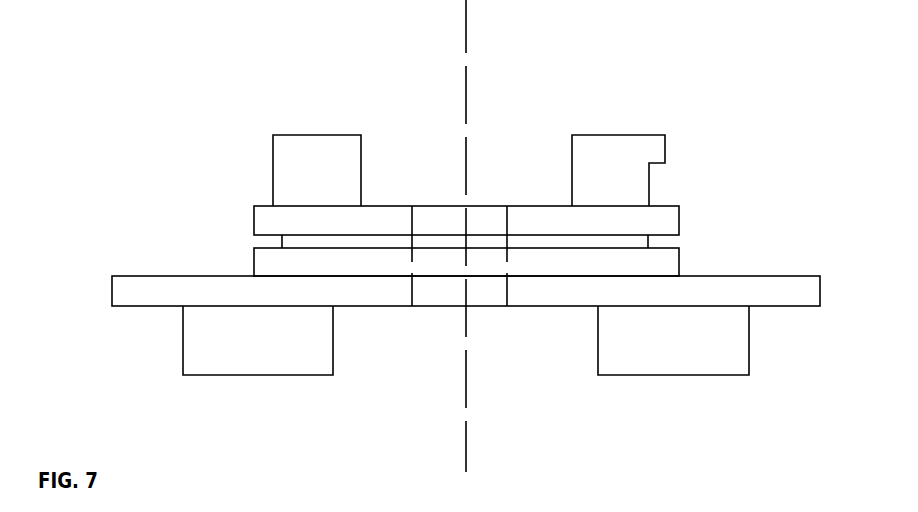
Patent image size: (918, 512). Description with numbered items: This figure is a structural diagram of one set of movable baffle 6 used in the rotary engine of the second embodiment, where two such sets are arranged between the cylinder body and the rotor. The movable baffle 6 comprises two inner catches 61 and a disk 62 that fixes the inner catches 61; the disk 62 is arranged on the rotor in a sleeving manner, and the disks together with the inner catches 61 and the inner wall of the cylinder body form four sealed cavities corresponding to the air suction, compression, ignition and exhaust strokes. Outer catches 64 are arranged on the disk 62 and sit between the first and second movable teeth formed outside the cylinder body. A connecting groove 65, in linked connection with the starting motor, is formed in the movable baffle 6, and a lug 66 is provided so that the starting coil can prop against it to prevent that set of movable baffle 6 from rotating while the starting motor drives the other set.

The movable baffle 6 is at (198, 105).
The inner catch 61 is at (243, 341).
The disk 62 is at (189, 276).
The outer catch 64 is at (595, 202).
The connecting groove 65 is at (276, 236).
The lug 66 is at (663, 148).